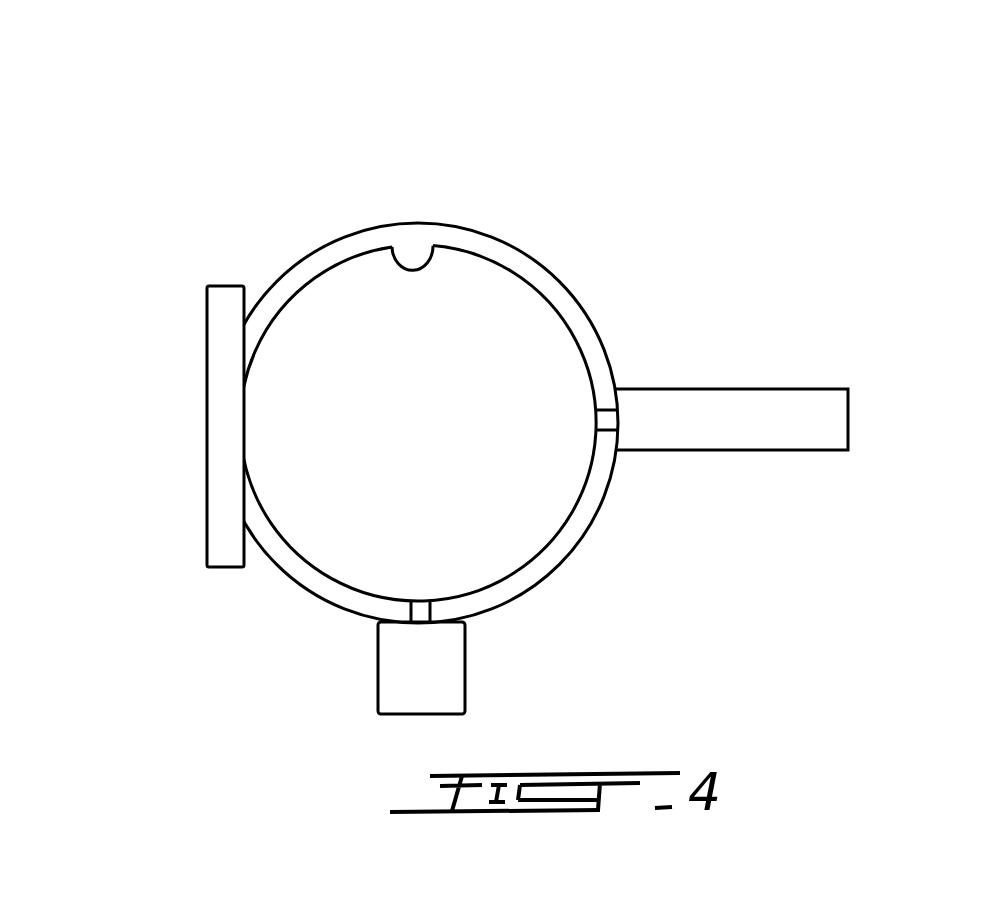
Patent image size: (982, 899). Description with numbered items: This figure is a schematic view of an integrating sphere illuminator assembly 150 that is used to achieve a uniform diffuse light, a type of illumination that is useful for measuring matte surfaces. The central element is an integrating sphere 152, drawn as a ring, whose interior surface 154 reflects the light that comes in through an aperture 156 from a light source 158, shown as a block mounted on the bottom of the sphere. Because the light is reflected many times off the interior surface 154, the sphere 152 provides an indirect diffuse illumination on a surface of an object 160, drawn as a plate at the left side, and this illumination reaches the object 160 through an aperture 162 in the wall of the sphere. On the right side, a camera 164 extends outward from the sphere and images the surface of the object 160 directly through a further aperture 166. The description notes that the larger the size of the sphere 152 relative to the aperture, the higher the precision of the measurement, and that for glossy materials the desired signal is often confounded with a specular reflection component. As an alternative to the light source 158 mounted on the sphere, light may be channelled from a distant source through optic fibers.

The integrating sphere illuminator assembly 150 is at (227, 200).
The integrating sphere 152 is at (532, 256).
The interior surface 154 is at (434, 258).
The aperture 156 is at (420, 602).
The light source 158 is at (430, 677).
The object 160 is at (227, 325).
The aperture 162 is at (243, 423).
The camera 164 is at (787, 403).
The aperture 166 is at (597, 422).